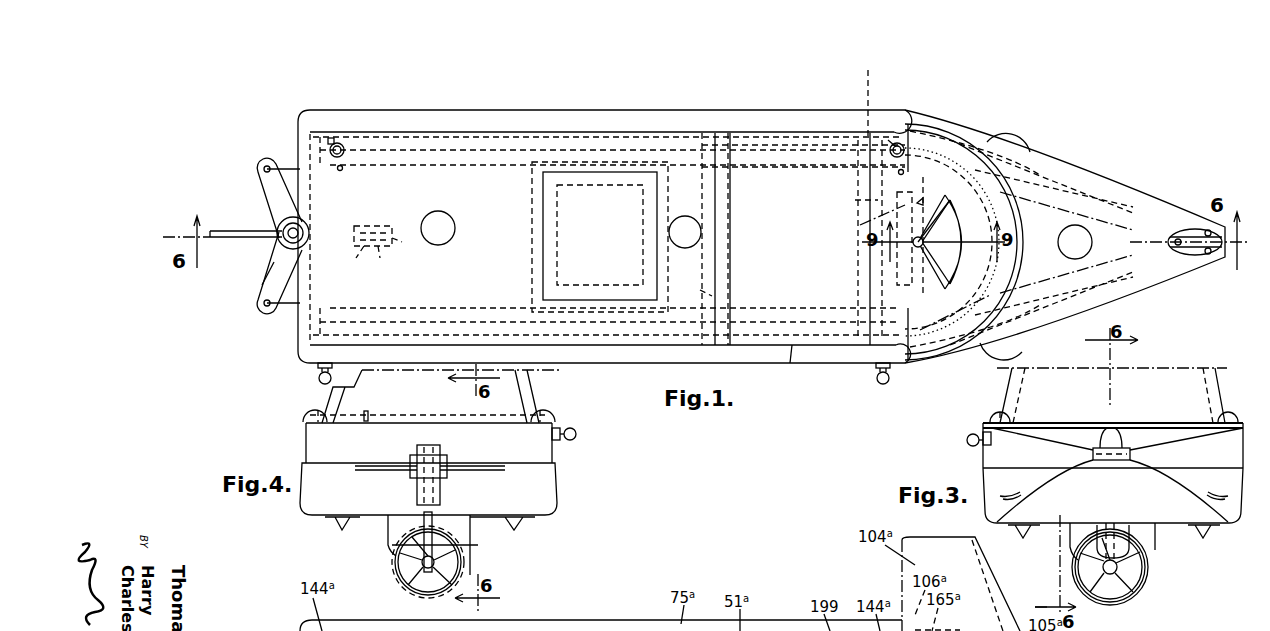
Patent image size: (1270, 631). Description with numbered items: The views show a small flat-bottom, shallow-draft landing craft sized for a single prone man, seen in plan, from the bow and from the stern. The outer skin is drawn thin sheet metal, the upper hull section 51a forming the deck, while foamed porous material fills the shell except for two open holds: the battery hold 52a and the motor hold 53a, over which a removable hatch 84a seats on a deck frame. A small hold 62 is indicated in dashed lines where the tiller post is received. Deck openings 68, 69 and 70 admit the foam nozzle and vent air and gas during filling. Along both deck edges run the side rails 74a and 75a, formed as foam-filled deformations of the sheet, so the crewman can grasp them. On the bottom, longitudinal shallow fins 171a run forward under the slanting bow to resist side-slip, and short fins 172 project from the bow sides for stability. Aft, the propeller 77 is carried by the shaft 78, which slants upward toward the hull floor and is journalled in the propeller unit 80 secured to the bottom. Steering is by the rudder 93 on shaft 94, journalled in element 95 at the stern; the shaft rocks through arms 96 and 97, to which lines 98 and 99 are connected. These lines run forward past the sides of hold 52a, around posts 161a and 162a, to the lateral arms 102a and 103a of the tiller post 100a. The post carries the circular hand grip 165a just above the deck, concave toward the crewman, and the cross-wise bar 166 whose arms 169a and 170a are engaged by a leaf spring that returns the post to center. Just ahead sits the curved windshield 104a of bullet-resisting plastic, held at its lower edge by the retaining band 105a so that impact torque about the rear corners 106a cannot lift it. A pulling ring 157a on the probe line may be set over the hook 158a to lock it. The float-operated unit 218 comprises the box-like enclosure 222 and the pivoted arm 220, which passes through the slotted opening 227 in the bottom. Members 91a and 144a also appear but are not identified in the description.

In FIG. 1, the side rail 74a is at (628, 121).
In FIG. 4, the side rail 74a is at (304, 415).
In FIG. 3, the side rail 74a is at (1232, 420).
In FIG. 1, the longitudinally extending shallow fin 171a is at (508, 150).
In FIG. 4, the longitudinally extending shallow fin 171a is at (337, 522).
In FIG. 3, the longitudinally extending shallow fin 171a is at (1022, 538).
In FIG. 1, the bulkhead 91a is at (785, 296).
In FIG. 1, the post 162a is at (868, 330).
In FIG. 1, the post 161a is at (875, 96).
In FIG. 1, the hatch 84a is at (572, 246).
In FIG. 1, the hold 53a is at (530, 281).
In FIG. 1, the hold 52a is at (700, 288).
In FIG. 1, the opening 68 is at (449, 218).
In FIG. 1, the opening 69 is at (685, 216).
In FIG. 1, the opening 70 is at (1062, 240).
In FIG. 1, the float and slip-stream operated unit 218 is at (379, 224).
In FIG. 1, the open bottom box-like enclosure 222 is at (409, 250).
In FIG. 1, the slotted opening 227 is at (357, 261).
In FIG. 1, the downwardly extending arm 220 is at (388, 262).
In FIG. 1, the shaft 94 is at (300, 233).
In FIG. 4, the shaft 94 is at (446, 552).
In FIG. 1, the rudder 93 is at (250, 232).
In FIG. 4, the rudder 93 is at (433, 522).
In FIG. 1, the arm 97 is at (278, 197).
In FIG. 4, the arm 97 is at (372, 470).
In FIG. 1, the element 95 is at (286, 246).
In FIG. 4, the element 95 is at (446, 458).
In FIG. 1, the line 99 is at (290, 165).
In FIG. 1, the line 98 is at (290, 307).
In FIG. 1, the arm 96 is at (274, 281).
In FIG. 4, the arm 96 is at (490, 470).
In FIG. 1, the ring 157a is at (340, 145).
In FIG. 1, the hook 158a is at (341, 170).
In FIG. 4, the hook 158a is at (368, 412).
In FIG. 1, the rear corner of windshield 106a is at (918, 150).
In FIG. 1, the arm 103a is at (952, 160).
In FIG. 1, the curved windshield 104a is at (998, 200).
In FIG. 4, the curved windshield 104a is at (522, 397).
In FIG. 3, the curved windshield 104a is at (1150, 385).
In FIG. 1, the retaining band 105a is at (1030, 195).
In FIG. 4, the retaining band 105a is at (424, 415).
In FIG. 1, the short fin 172 is at (1012, 128).
In FIG. 3, the short fin 172 is at (1018, 492).
In FIG. 1, the arm 102a is at (942, 346).
In FIG. 1, the circular hand grip 165a is at (970, 262).
In FIG. 1, the tiller post 100a is at (915, 246).
In FIG. 1, the arm 169a is at (904, 288).
In FIG. 1, the small hold 62 is at (876, 204).
In FIG. 1, the cross-wise extending bar 166 is at (920, 200).
In FIG. 1, the arm 170a is at (858, 222).
In FIG. 1, the fitting 144a is at (319, 378).
In FIG. 4, the fitting 144a is at (577, 433).
In FIG. 3, the fitting 144a is at (966, 446).
In FIG. 1, the side rail 75a is at (795, 365).
In FIG. 4, the side rail 75a is at (550, 413).
In FIG. 3, the side rail 75a is at (996, 420).
In FIG. 4, the propeller unit 80 is at (392, 548).
In FIG. 3, the propeller unit 80 is at (1140, 546).
In FIG. 4, the propeller 77 is at (412, 578).
In FIG. 3, the propeller 77 is at (1128, 583).
In FIG. 3, the shaft 78 is at (1131, 568).
In FIG. 3, the upper hull section 51a is at (1177, 448).